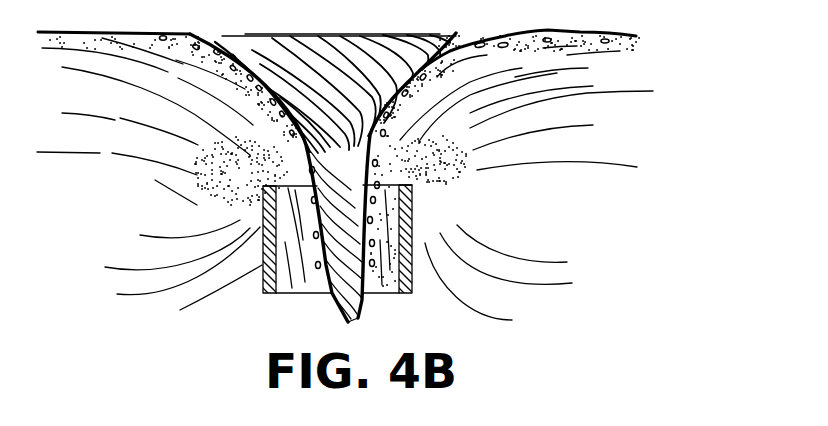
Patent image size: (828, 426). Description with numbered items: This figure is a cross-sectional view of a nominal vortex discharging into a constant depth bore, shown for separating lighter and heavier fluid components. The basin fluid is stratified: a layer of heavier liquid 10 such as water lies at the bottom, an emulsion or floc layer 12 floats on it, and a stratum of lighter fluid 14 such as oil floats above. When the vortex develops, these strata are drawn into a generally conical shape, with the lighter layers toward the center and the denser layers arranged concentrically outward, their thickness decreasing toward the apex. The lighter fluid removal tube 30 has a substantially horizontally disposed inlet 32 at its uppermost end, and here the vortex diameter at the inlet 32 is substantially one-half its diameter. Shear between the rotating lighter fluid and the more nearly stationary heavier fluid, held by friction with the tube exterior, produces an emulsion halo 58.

The heavier liquid 10 is at (593, 108).
The emulsion or floc layer 12 is at (580, 40).
The lighter fluid 14 is at (458, 42).
The lighter fluid removal tube 30 is at (413, 278).
The inlet 32 is at (404, 178).
The emulsion halo 58 is at (447, 160).